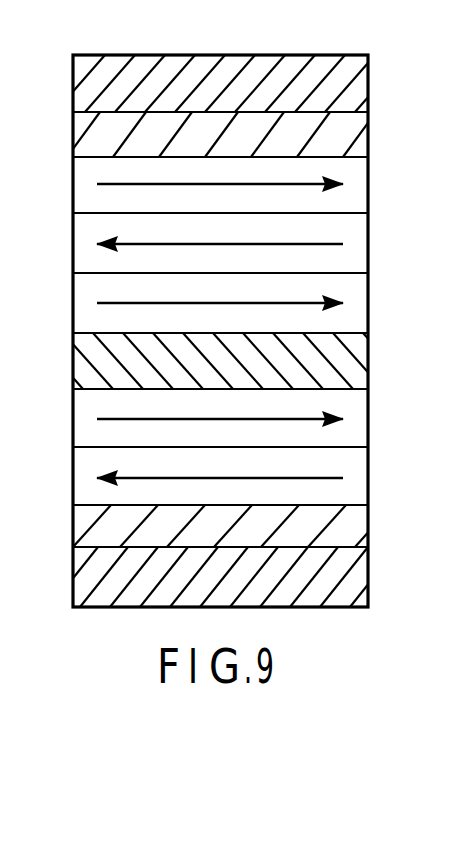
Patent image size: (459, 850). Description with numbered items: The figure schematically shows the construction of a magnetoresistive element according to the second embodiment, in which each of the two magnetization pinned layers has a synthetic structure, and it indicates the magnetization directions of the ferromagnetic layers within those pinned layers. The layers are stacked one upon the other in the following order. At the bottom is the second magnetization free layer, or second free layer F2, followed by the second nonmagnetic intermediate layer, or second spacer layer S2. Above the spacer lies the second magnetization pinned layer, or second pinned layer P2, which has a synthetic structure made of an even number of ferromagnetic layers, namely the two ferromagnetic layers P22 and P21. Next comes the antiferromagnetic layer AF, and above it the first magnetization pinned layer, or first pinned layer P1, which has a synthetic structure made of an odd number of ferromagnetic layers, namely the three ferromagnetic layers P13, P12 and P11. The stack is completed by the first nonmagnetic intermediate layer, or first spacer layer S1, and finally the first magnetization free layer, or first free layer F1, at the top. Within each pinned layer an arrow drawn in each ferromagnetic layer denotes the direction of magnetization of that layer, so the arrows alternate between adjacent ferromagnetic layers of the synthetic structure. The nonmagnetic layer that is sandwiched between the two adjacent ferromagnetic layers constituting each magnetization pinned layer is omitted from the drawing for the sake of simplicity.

The first magnetization free layer F1 is at (362, 89).
The first nonmagnetic intermediate layer S1 is at (362, 143).
The ferromagnetic layer P11 is at (79, 189).
The ferromagnetic layer P12 is at (79, 246).
The ferromagnetic layer P13 is at (79, 306).
The first magnetization pinned layer P1 is at (380, 155).
The antiferromagnetic layer AF is at (362, 366).
The ferromagnetic layer P21 is at (79, 423).
The ferromagnetic layer P22 is at (79, 481).
The second magnetization pinned layer P2 is at (380, 388).
The second nonmagnetic intermediate layer S2 is at (362, 532).
The second magnetization free layer F2 is at (362, 582).